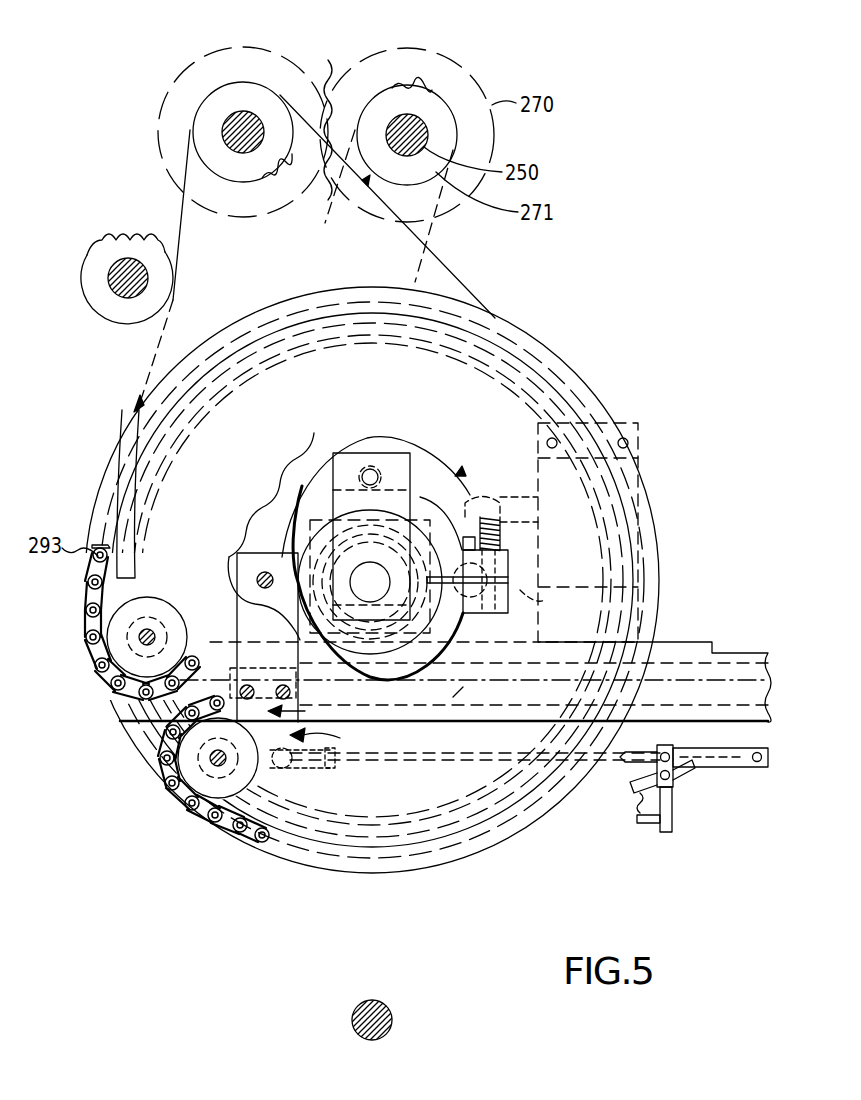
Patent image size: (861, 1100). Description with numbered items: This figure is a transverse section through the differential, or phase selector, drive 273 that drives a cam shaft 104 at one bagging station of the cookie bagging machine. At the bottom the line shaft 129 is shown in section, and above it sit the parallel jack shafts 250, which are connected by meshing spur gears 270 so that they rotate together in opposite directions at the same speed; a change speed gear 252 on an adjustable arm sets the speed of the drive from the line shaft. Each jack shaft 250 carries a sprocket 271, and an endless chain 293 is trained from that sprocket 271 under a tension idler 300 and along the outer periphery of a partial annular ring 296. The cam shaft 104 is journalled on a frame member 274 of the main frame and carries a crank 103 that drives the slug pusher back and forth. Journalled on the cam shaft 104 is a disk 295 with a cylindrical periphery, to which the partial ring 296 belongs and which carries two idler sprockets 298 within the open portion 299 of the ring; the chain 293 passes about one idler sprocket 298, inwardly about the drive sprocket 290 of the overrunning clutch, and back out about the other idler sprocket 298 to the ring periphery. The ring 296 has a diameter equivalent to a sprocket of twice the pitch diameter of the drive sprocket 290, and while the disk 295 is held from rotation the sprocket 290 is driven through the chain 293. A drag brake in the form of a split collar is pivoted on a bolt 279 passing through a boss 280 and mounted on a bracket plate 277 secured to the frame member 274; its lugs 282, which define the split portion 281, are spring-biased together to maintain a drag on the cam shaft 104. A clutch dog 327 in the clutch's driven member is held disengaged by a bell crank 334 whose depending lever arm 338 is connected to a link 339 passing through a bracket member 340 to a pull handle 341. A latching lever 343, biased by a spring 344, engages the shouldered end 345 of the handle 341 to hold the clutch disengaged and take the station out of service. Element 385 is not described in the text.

The crank 103 is at (397, 458).
The cam shaft 104 is at (372, 580).
The line shaft 129 is at (372, 1040).
The jack shaft 250 is at (228, 147).
The change speed gear 252 is at (502, 520).
The spur gears 270 is at (175, 104).
The sprocket 271 is at (256, 182).
The phase selector drive 273 is at (602, 408).
The frame member 274 is at (724, 652).
The bracket plate 277 is at (248, 630).
The bolt 279 is at (265, 570).
The boss 280 is at (250, 557).
The split portion 281 is at (508, 603).
The lugs 282 is at (508, 556).
The drive sprocket 290 is at (314, 433).
The endless chain 293 is at (433, 232).
The disk 295 is at (560, 356).
The partial annular ring 296 is at (270, 322).
The idler sprockets 298 is at (145, 590).
The open portion 299 is at (156, 574).
The tension idler 300 is at (95, 300).
The clutch dog 327 is at (424, 693).
The bell crank 334 is at (322, 728).
The depending lever arm 338 is at (334, 768).
The link 339 is at (472, 758).
The bracket member 340 is at (668, 748).
The pull handle 341 is at (757, 770).
The latching lever 343 is at (682, 772).
The spring 344 is at (636, 800).
The shouldered end 345 is at (690, 749).
The bracket 385 is at (250, 668).